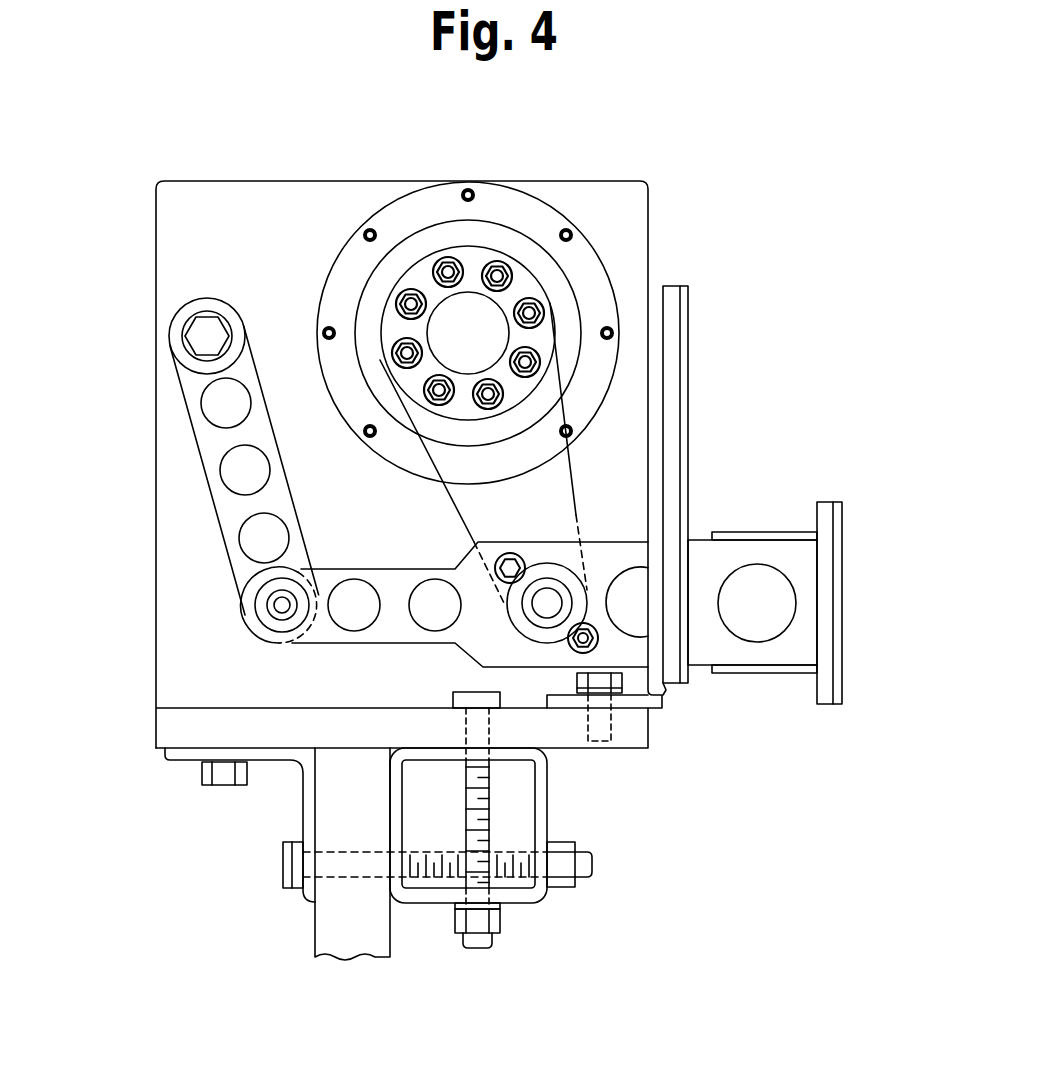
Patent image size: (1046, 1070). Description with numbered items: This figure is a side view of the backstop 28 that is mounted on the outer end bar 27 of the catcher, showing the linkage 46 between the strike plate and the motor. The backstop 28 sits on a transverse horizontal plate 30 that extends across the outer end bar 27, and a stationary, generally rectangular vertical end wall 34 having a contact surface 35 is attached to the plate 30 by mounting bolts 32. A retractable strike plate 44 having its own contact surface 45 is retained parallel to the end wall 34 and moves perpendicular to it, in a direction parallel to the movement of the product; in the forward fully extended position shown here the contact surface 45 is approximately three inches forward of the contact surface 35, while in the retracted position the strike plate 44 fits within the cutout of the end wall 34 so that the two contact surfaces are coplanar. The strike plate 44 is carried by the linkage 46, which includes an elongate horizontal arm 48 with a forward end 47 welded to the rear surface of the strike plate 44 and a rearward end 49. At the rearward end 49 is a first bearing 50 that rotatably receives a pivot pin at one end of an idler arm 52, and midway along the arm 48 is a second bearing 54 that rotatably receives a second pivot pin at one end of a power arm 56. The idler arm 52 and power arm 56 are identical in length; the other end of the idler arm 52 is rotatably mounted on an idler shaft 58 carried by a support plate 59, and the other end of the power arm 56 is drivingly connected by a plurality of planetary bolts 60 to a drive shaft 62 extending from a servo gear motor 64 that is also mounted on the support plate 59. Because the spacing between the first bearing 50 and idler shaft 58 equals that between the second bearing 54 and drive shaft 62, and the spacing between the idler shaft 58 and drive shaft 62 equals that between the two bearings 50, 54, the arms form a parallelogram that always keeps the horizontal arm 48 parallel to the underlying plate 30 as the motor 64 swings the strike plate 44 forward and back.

The outer end bar 27 is at (547, 797).
The backstop 28 is at (836, 226).
The transverse horizontal plate 30 is at (623, 750).
The mounting bolts 32 is at (613, 725).
The stationary vertical end wall 34 is at (672, 286).
The contact surface 35 is at (688, 383).
The retractable strike plate 44 is at (836, 496).
The contact surface 45 is at (842, 617).
The linkage 46 is at (417, 672).
The forward end 47 is at (780, 673).
The elongate horizontal arm 48 is at (528, 667).
The rearward end 49 is at (244, 582).
The first bearing 50 is at (275, 608).
The idler arm 52 is at (205, 479).
The second bearing 54 is at (550, 602).
The power arm 56 is at (566, 445).
The idler shaft 58 is at (185, 340).
The support plate 59 is at (156, 250).
The planetary bolts 60 is at (425, 385).
The drive shaft 62 is at (462, 331).
The servo gear motor 64 is at (337, 260).